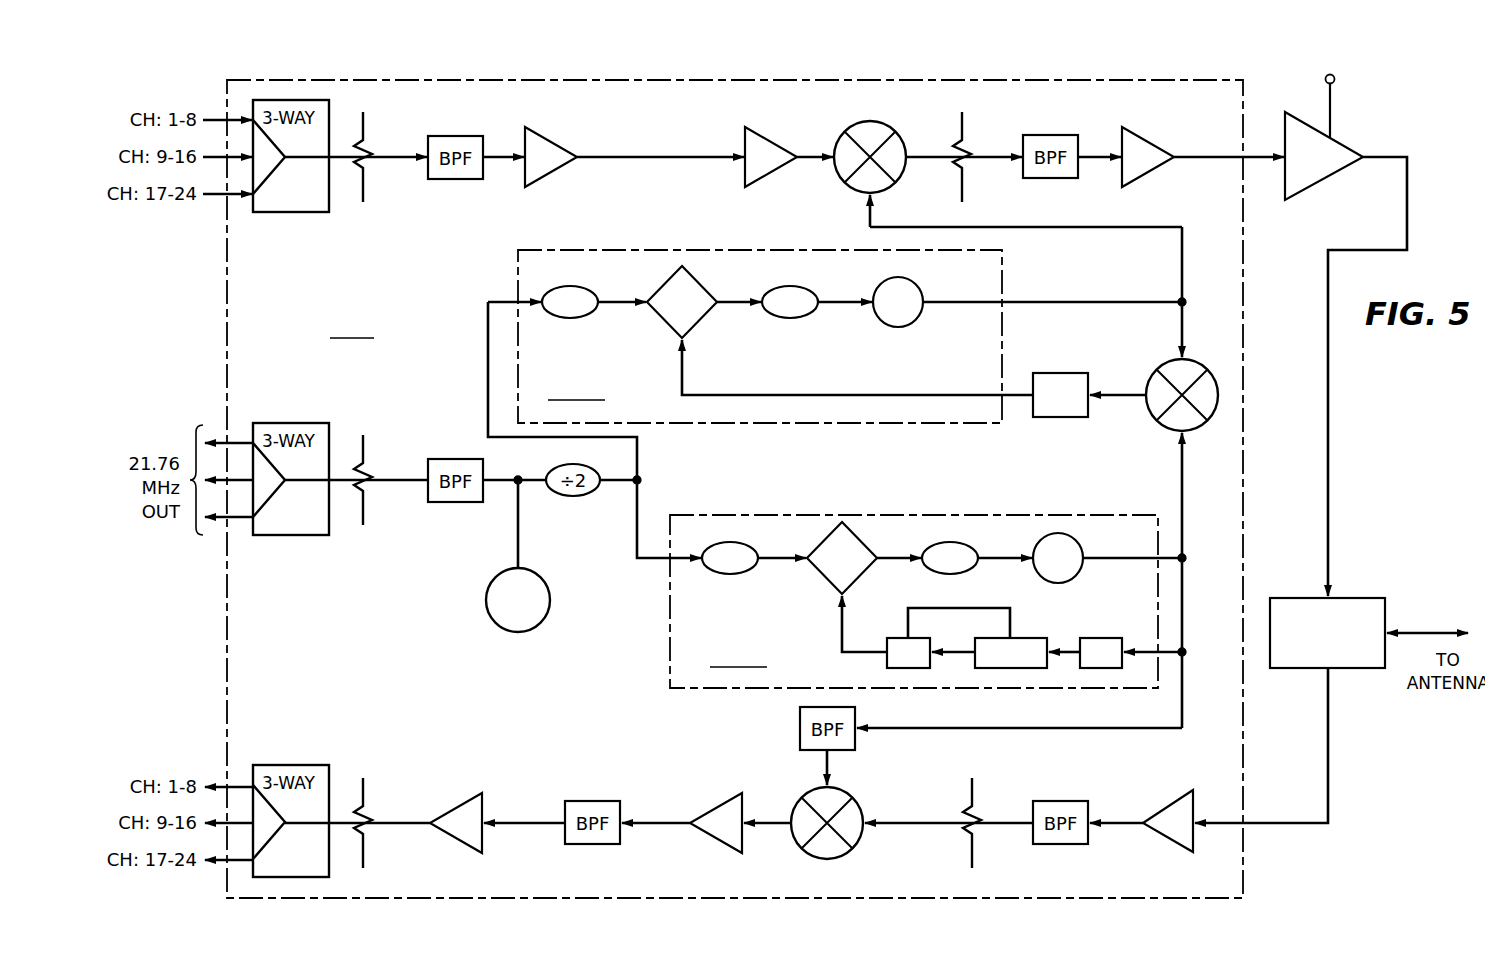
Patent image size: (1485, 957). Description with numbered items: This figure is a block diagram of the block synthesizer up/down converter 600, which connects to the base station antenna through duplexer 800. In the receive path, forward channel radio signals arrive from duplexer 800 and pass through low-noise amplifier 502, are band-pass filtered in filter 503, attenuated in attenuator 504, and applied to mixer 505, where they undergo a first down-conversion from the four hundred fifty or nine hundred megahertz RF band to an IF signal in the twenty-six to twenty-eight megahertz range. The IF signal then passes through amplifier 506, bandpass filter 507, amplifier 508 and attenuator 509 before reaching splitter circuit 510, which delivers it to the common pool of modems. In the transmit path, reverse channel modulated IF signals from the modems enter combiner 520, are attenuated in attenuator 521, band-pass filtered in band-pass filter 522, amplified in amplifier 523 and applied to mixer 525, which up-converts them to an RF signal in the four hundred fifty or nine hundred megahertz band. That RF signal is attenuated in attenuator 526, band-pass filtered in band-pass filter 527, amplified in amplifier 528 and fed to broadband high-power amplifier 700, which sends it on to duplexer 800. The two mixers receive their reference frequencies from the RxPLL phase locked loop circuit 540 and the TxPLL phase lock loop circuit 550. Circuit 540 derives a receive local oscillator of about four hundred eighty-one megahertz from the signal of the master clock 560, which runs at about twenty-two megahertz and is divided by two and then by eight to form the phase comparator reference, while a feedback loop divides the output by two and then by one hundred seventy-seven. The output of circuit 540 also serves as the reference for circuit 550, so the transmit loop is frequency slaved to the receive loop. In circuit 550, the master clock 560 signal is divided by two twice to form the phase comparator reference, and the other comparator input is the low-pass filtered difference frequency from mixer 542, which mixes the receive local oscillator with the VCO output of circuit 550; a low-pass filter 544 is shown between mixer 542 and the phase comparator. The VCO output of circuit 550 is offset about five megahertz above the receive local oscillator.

The low-noise amplifier 502 is at (1176, 800).
The band-pass filter 503 is at (1054, 800).
The attenuator 504 is at (968, 816).
The mixer 505 is at (812, 793).
The amplifier 506 is at (709, 806).
The bandpass filter 507 is at (602, 802).
The amplifier 508 is at (461, 794).
The attenuator 509 is at (370, 810).
The splitter circuit 510 is at (300, 764).
The combiner 520 is at (288, 212).
The attenuator 521 is at (366, 143).
The band-pass filter 522 is at (455, 136).
The amplifier 523 is at (545, 128).
The mixer 525 is at (852, 128).
The attenuator 526 is at (966, 143).
The band-pass filter 527 is at (1050, 135).
The amplifier 528 is at (1148, 130).
The RxPLL phase locked loop circuit 540 is at (1095, 515).
The mixer 542 is at (1160, 368).
The low pass filter 544 is at (1056, 372).
The TxPLL phase lock loop circuit 550 is at (1002, 272).
The master clock 560 is at (540, 576).
The up/down converter 600 is at (280, 79).
The broadband high-power amplifier 700 is at (1330, 176).
The duplexer 800 is at (1364, 597).